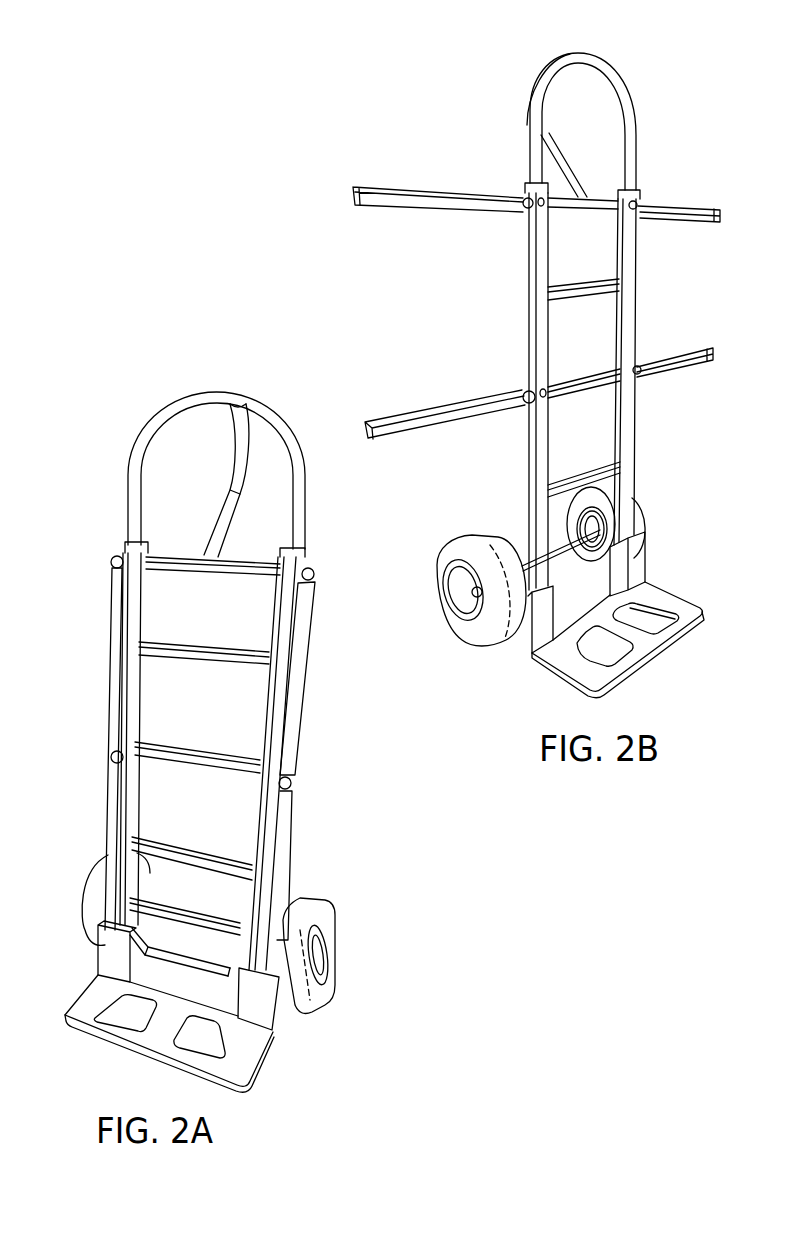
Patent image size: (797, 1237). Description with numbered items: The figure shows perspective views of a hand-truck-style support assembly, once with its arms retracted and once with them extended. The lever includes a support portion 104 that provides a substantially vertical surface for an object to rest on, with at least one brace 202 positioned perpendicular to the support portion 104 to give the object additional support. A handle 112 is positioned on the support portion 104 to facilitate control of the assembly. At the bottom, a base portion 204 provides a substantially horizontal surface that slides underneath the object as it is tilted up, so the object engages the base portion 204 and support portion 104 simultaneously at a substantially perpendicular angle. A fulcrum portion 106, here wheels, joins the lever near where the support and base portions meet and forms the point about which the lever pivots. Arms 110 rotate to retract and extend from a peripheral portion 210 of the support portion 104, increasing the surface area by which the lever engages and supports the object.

In FIG. 2A, the support portion 104 is at (148, 437).
In FIG. 2B, the support portion 104 is at (620, 93).
In FIG. 2A, the fulcrum portion 106 is at (330, 923).
In FIG. 2B, the fulcrum portion 106 is at (480, 540).
In FIG. 2A, the arm 110 is at (112, 628).
In FIG. 2B, the arm 110 is at (427, 187).
In FIG. 2A, the handle 112 is at (245, 453).
In FIG. 2B, the handle 112 is at (564, 165).
In FIG. 2A, the brace 202 is at (228, 860).
In FIG. 2B, the brace 202 is at (597, 477).
In FIG. 2A, the base portion 204 is at (247, 1070).
In FIG. 2B, the base portion 204 is at (697, 612).
In FIG. 2B, the peripheral portion 210 is at (527, 187).